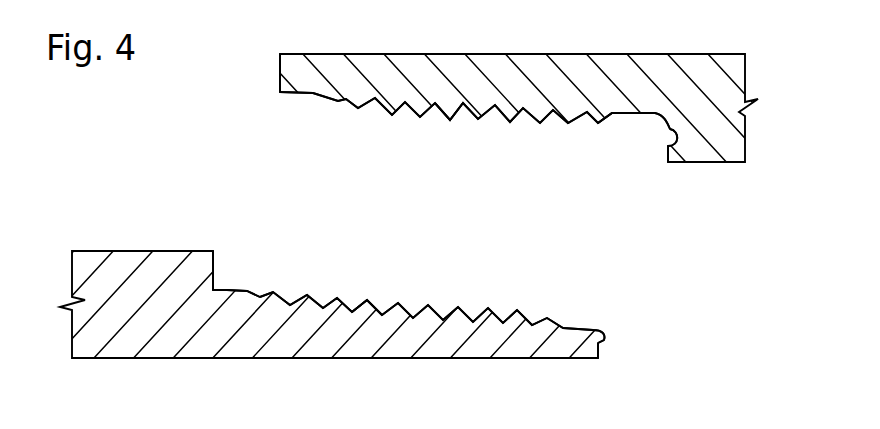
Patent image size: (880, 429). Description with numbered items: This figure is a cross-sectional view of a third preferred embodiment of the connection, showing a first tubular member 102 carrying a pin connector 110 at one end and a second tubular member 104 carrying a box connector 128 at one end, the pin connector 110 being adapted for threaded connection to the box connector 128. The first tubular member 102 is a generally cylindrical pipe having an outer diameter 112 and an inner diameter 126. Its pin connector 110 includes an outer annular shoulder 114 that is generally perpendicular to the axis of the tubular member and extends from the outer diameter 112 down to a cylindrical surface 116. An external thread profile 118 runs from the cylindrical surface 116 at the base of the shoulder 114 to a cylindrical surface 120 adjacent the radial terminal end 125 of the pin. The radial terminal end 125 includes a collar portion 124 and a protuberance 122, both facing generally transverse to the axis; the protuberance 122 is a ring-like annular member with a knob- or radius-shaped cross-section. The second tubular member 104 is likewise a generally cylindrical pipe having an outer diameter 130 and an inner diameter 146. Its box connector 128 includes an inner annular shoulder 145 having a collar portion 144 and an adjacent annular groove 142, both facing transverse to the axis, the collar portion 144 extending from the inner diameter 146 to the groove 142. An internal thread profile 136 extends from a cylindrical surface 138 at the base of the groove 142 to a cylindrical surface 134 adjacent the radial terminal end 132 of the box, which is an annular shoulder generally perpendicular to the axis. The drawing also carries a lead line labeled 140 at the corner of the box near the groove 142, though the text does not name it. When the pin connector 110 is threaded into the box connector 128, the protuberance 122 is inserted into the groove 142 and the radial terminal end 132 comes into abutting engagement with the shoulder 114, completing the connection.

The first tubular member 102 is at (160, 343).
The second tubular member 104 is at (657, 72).
The pin connector 110 is at (520, 278).
The outer diameter 112 is at (138, 251).
The outer annular shoulder 114 is at (217, 255).
The cylindrical surface 116 is at (230, 290).
The external thread profile 118 is at (370, 300).
The cylindrical surface 120 is at (593, 330).
The protuberance 122 is at (606, 337).
The collar portion 124 is at (605, 355).
The radial terminal end 125 is at (612, 348).
The inner diameter 126 is at (313, 360).
The box connector 128 is at (385, 130).
The outer diameter 130 is at (413, 54).
The radial terminal end 132 is at (282, 54).
The cylindrical surface 134 is at (290, 93).
The internal thread profile 136 is at (450, 118).
The cylindrical surface 138 is at (630, 114).
The box shoulder corner 140 is at (663, 127).
The annular groove 142 is at (690, 163).
The collar portion 144 is at (672, 147).
The inner annular shoulder 145 is at (657, 145).
The inner diameter 146 is at (710, 163).